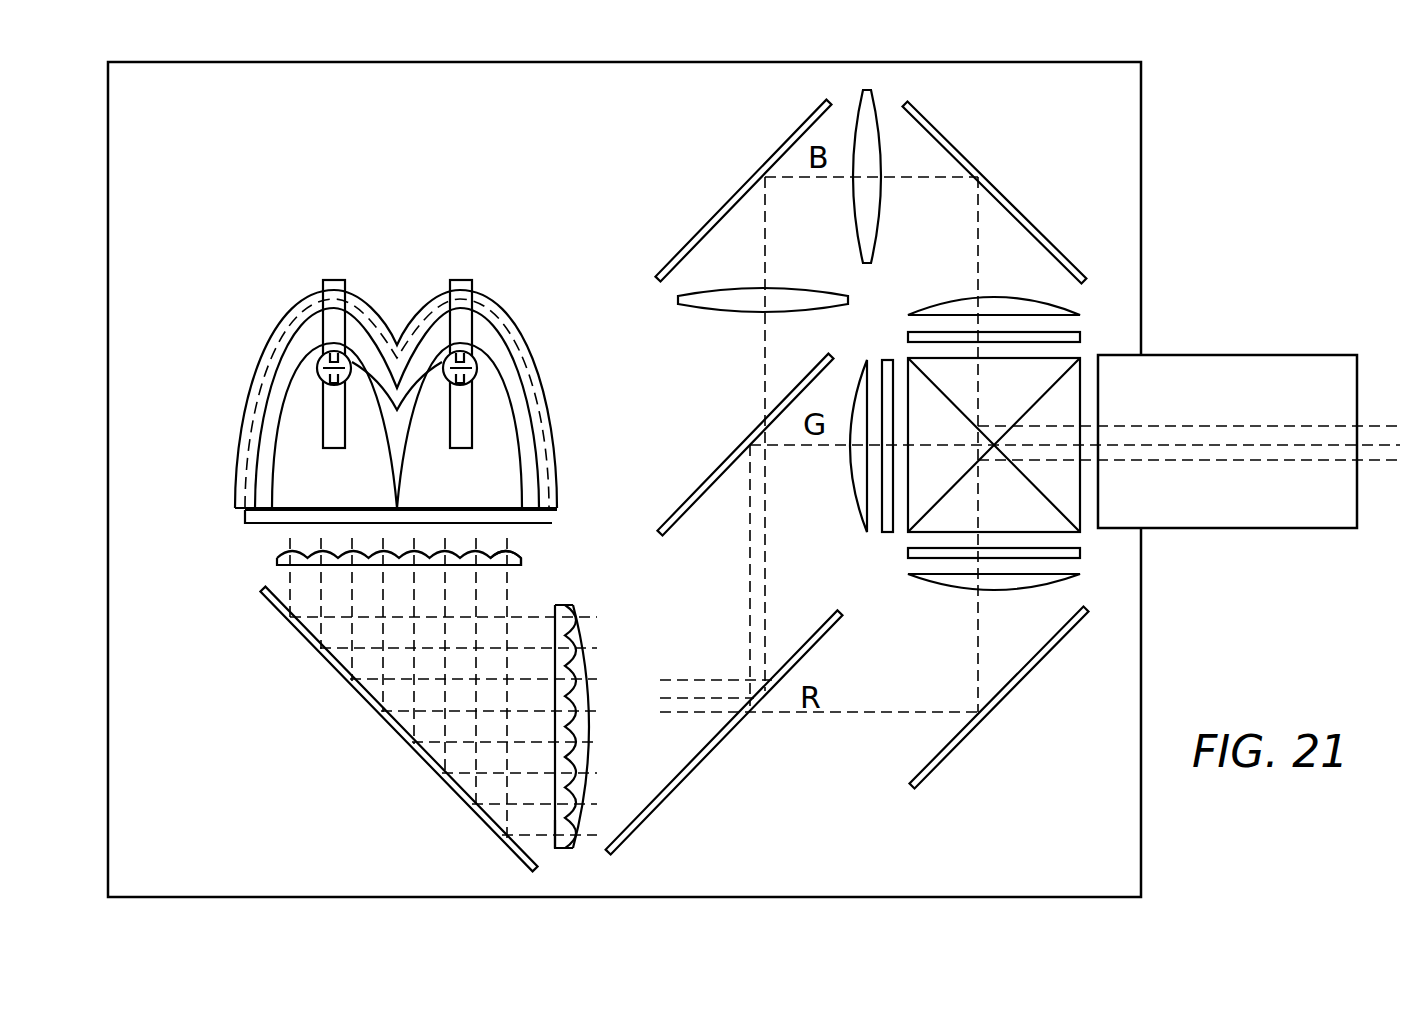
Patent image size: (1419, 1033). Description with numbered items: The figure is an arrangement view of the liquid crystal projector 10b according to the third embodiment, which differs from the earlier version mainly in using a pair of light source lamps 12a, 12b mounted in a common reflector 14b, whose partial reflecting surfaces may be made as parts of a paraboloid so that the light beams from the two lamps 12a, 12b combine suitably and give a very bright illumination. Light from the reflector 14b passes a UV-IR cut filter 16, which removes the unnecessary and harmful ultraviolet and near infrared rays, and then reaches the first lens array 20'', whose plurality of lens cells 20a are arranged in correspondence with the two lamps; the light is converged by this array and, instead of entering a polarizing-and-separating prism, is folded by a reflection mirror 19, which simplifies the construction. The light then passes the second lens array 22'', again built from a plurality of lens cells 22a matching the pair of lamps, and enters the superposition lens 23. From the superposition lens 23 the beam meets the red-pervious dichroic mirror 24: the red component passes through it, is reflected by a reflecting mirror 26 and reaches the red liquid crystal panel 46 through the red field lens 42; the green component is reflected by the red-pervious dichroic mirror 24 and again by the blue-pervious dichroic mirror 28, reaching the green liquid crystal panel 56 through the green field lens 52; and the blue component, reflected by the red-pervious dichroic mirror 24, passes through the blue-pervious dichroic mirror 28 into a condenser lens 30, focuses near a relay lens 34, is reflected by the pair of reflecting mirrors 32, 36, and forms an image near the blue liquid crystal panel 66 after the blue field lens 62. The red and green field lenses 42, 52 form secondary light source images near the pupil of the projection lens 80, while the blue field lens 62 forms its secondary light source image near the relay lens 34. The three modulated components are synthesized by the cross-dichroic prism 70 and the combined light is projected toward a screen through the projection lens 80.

The liquid crystal projector 10b is at (1205, 117).
The light source lamp 12a is at (334, 280).
The light source lamp 12b is at (460, 280).
The reflector 14b is at (525, 343).
The UV-IR cut filter 16 is at (245, 513).
The first lens array 20'' is at (410, 524).
The lens cell 20a is at (522, 557).
The second lens array 22'' is at (606, 725).
The lens cell 22a is at (563, 848).
The superposition lens 23 is at (577, 612).
The reflection mirror 19 is at (258, 592).
The red-pervious dichroic mirror 24 is at (650, 806).
The reflecting mirror 26 is at (937, 762).
The blue-pervious dichroic mirror 28 is at (702, 482).
The condenser lens 30 is at (678, 299).
The reflecting mirror 32 is at (728, 203).
The relay lens 34 is at (880, 98).
The reflecting mirror 36 is at (958, 150).
The red field lens 42 is at (1075, 578).
The red liquid crystal panel 46 is at (1080, 553).
The green field lens 52 is at (860, 518).
The green liquid crystal panel 56 is at (884, 535).
The blue field lens 62 is at (1075, 310).
The blue liquid crystal panel 66 is at (1080, 337).
The cross-dichroic prism 70 is at (1077, 357).
The projection lens 80 is at (1306, 355).